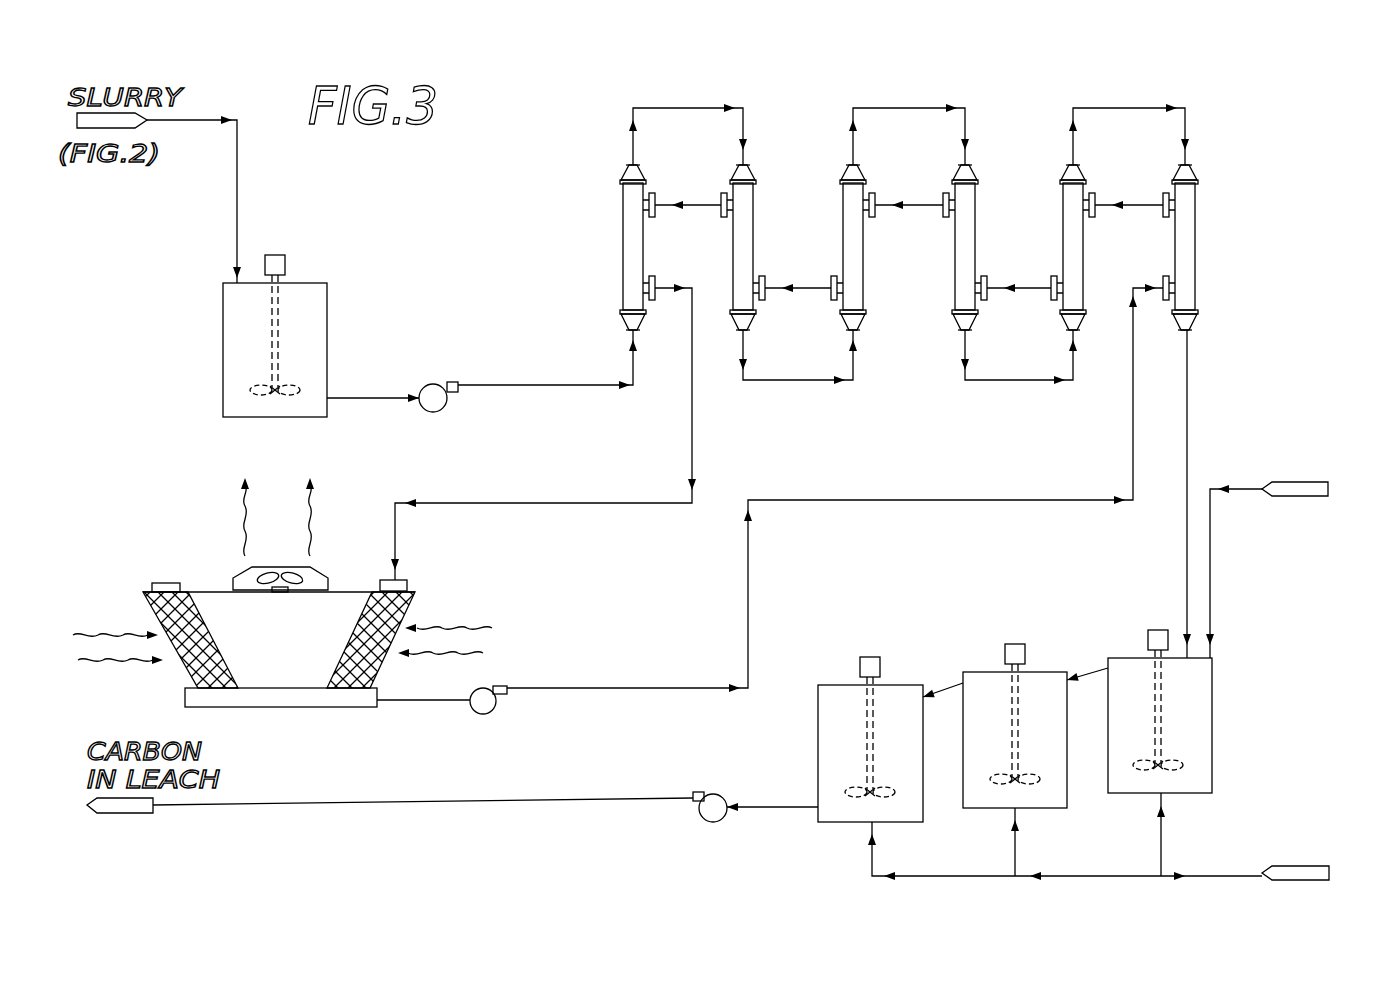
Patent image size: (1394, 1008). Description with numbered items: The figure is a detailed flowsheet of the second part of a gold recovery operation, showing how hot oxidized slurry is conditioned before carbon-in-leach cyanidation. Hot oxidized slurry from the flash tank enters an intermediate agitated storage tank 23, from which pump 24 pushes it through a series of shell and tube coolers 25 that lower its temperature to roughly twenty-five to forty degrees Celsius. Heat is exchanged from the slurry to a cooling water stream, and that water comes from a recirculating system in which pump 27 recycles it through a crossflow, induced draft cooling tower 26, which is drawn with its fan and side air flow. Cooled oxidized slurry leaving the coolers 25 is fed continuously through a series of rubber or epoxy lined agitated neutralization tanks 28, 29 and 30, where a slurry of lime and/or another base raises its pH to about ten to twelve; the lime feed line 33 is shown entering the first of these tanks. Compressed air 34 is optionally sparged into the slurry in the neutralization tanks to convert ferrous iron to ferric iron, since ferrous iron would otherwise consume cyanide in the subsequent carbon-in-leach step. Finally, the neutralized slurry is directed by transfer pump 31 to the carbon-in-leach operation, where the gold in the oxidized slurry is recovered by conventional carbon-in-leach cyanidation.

The intermediate agitated storage tank 23 is at (327, 283).
The pump 24 is at (445, 408).
The shell and tube coolers 25 is at (622, 178).
The crossflow, induced draft cooling tower 26 is at (415, 592).
The pump 27 is at (497, 710).
The agitated neutralization tank 28 is at (1108, 658).
The agitated neutralization tank 29 is at (963, 672).
The agitated neutralization tank 30 is at (818, 685).
The transfer pump 31 is at (703, 818).
The lime feed line 33 is at (1212, 582).
The compressed air 34 is at (1199, 876).